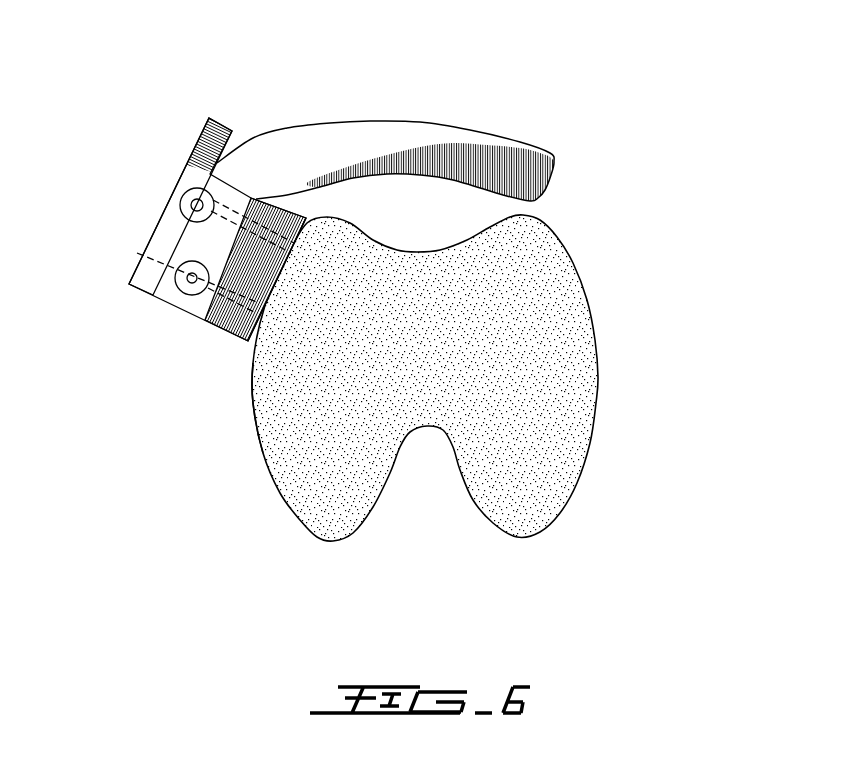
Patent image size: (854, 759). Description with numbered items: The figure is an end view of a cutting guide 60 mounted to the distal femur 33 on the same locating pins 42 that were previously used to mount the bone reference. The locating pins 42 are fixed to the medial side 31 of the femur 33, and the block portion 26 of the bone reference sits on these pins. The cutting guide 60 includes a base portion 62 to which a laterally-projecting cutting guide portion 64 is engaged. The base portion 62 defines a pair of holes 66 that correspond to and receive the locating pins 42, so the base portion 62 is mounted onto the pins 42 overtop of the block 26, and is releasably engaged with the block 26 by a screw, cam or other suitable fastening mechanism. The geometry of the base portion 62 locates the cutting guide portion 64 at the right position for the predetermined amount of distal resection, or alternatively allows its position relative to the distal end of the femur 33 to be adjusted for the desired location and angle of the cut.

The block portion 26 is at (235, 336).
The medial side 31 is at (278, 420).
The femur 33 is at (623, 376).
The locating pins 42 is at (150, 184).
The cutting guide 60 is at (175, 263).
The base portion 62 is at (157, 302).
The cutting guide portion 64 is at (374, 128).
The holes 66 is at (182, 193).